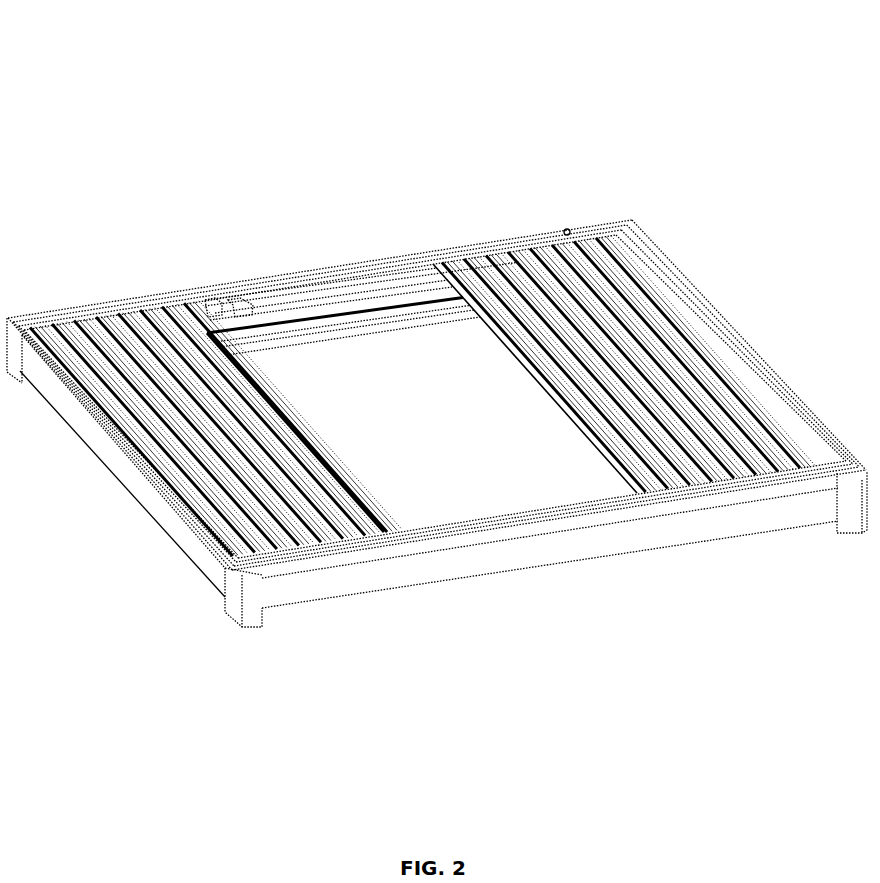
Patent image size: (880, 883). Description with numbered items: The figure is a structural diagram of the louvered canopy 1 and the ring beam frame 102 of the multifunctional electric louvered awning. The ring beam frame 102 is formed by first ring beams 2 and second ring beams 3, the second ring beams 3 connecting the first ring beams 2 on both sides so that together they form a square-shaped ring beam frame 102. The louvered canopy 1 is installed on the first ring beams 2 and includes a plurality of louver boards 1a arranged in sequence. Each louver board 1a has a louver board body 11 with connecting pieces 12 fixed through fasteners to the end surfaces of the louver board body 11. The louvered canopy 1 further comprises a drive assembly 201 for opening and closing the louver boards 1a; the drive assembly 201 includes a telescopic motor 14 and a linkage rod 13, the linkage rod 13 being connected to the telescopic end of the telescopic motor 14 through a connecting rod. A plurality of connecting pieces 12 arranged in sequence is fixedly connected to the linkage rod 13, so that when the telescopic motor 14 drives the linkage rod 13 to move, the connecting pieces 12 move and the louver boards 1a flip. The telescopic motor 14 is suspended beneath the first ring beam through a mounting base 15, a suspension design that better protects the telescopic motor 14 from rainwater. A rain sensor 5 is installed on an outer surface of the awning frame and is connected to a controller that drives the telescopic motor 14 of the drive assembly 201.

The louvered canopy 1 is at (622, 294).
The louver boards 1a is at (613, 347).
The first ring beams 2 is at (165, 297).
The second ring beams 3 is at (70, 318).
The rain sensor 5 is at (568, 232).
The louver board body 11 is at (517, 240).
The connecting pieces 12 is at (243, 297).
The linkage rod 13 is at (303, 290).
The telescopic motor 14 is at (352, 285).
The mounting base 15 is at (415, 270).
The ring beam frame 102 is at (158, 90).
The drive assembly 201 is at (382, 85).